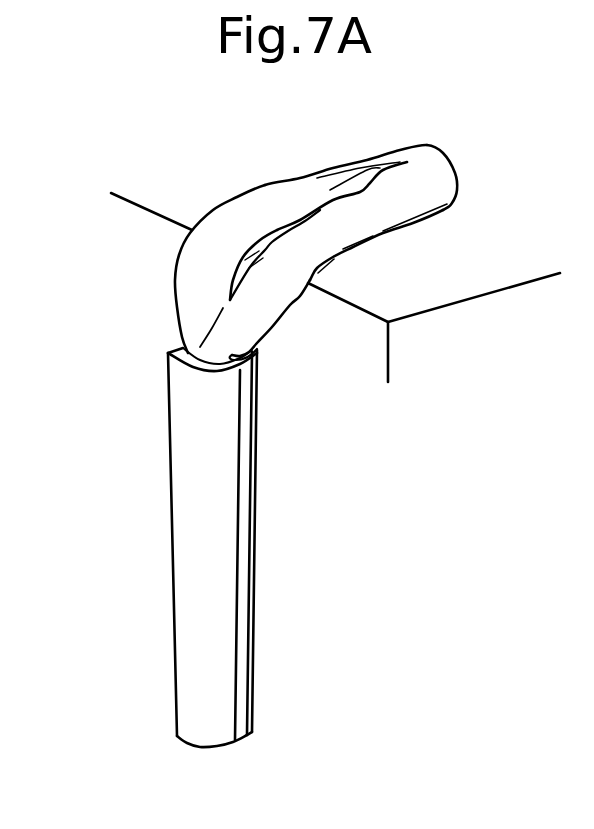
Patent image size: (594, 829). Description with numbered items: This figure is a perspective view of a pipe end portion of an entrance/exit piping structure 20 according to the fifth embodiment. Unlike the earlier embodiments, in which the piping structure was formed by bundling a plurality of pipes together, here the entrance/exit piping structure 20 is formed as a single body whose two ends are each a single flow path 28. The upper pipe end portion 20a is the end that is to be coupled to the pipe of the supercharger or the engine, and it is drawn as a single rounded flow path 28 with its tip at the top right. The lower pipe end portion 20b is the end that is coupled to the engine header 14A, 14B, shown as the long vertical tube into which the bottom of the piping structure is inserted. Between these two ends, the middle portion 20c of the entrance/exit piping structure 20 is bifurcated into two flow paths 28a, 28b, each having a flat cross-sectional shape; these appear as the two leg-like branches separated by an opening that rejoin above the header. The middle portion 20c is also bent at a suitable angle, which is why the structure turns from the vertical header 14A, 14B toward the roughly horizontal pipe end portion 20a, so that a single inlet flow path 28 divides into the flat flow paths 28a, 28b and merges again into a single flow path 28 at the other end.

The entrance/exit piping structure 20 is at (220, 192).
The pipe end portion 20a is at (430, 147).
The pipe end portion 20b is at (259, 346).
The middle portion 20c is at (313, 282).
The single flow path 28 is at (428, 177).
The flow path 28a is at (281, 289).
The flow path 28b is at (201, 257).
The engine header 14A is at (293, 547).
The engine header 14B is at (227, 478).